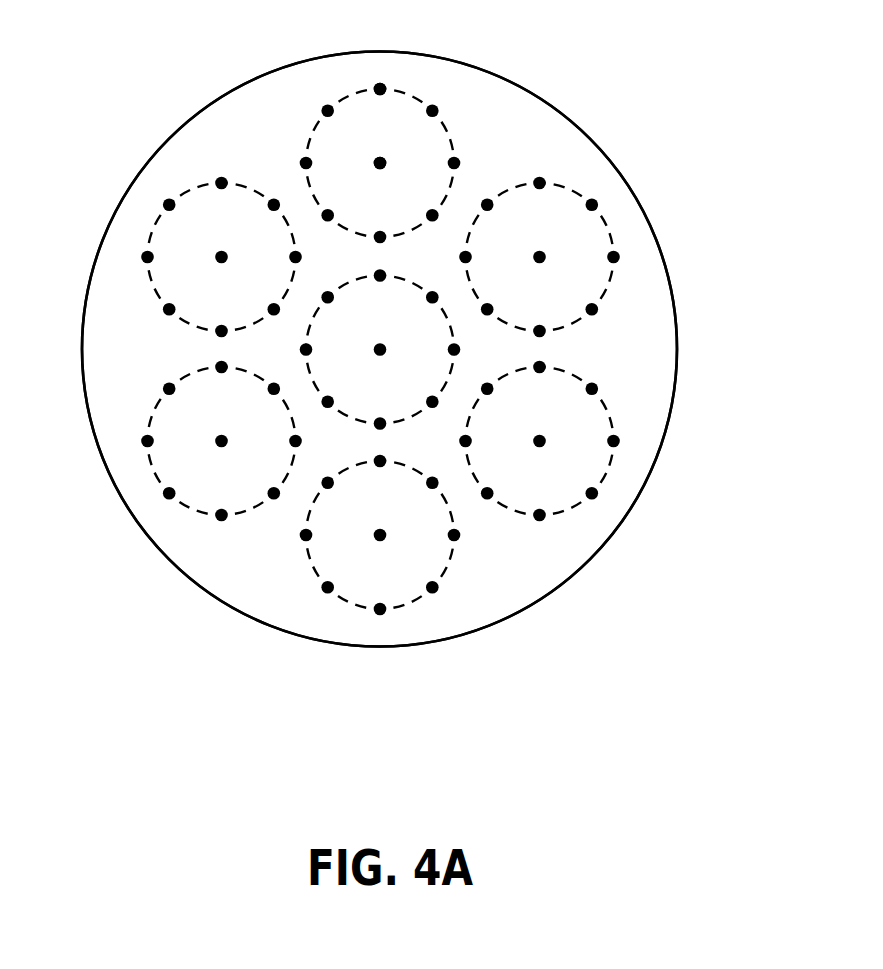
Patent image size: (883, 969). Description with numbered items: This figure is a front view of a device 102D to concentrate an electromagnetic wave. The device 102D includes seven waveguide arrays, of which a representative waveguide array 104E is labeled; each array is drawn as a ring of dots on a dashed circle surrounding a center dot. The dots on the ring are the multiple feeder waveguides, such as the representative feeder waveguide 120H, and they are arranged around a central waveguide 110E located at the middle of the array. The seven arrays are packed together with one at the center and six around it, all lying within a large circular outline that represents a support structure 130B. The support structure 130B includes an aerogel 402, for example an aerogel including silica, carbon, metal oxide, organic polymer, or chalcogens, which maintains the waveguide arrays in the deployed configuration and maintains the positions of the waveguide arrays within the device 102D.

The feeder waveguide 120H is at (380, 92).
The waveguide array 104E is at (501, 322).
The central waveguide 110E is at (380, 163).
The support structure 130B is at (432, 645).
The aerogel 402 is at (253, 584).
The device 102D is at (472, 405).